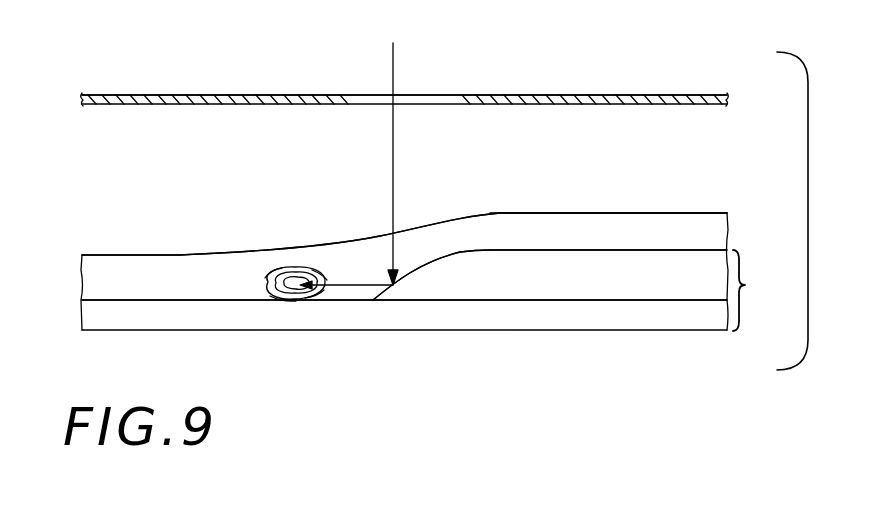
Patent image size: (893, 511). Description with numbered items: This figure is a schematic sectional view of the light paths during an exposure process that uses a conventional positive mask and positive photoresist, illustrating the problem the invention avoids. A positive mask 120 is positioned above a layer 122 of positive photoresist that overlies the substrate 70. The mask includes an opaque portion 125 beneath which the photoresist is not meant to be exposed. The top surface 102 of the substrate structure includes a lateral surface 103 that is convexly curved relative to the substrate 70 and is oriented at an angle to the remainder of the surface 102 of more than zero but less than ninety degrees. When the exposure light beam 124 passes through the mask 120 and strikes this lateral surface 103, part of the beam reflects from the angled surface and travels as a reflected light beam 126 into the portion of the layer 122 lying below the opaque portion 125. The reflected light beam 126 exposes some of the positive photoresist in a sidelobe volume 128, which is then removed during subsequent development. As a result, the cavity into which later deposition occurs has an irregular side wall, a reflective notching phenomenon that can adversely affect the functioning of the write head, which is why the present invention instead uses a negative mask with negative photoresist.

The substrate 70 is at (434, 272).
The surface 102 is at (112, 299).
The lateral surface 103 is at (420, 270).
The positive mask 120 is at (118, 90).
The layer of positive photoresist 122 is at (701, 222).
The exposure light beam 124 is at (393, 150).
The opaque portion of the mask 125 is at (224, 96).
The reflected light beam 126 is at (352, 285).
The sidelobe volume 128 is at (264, 282).